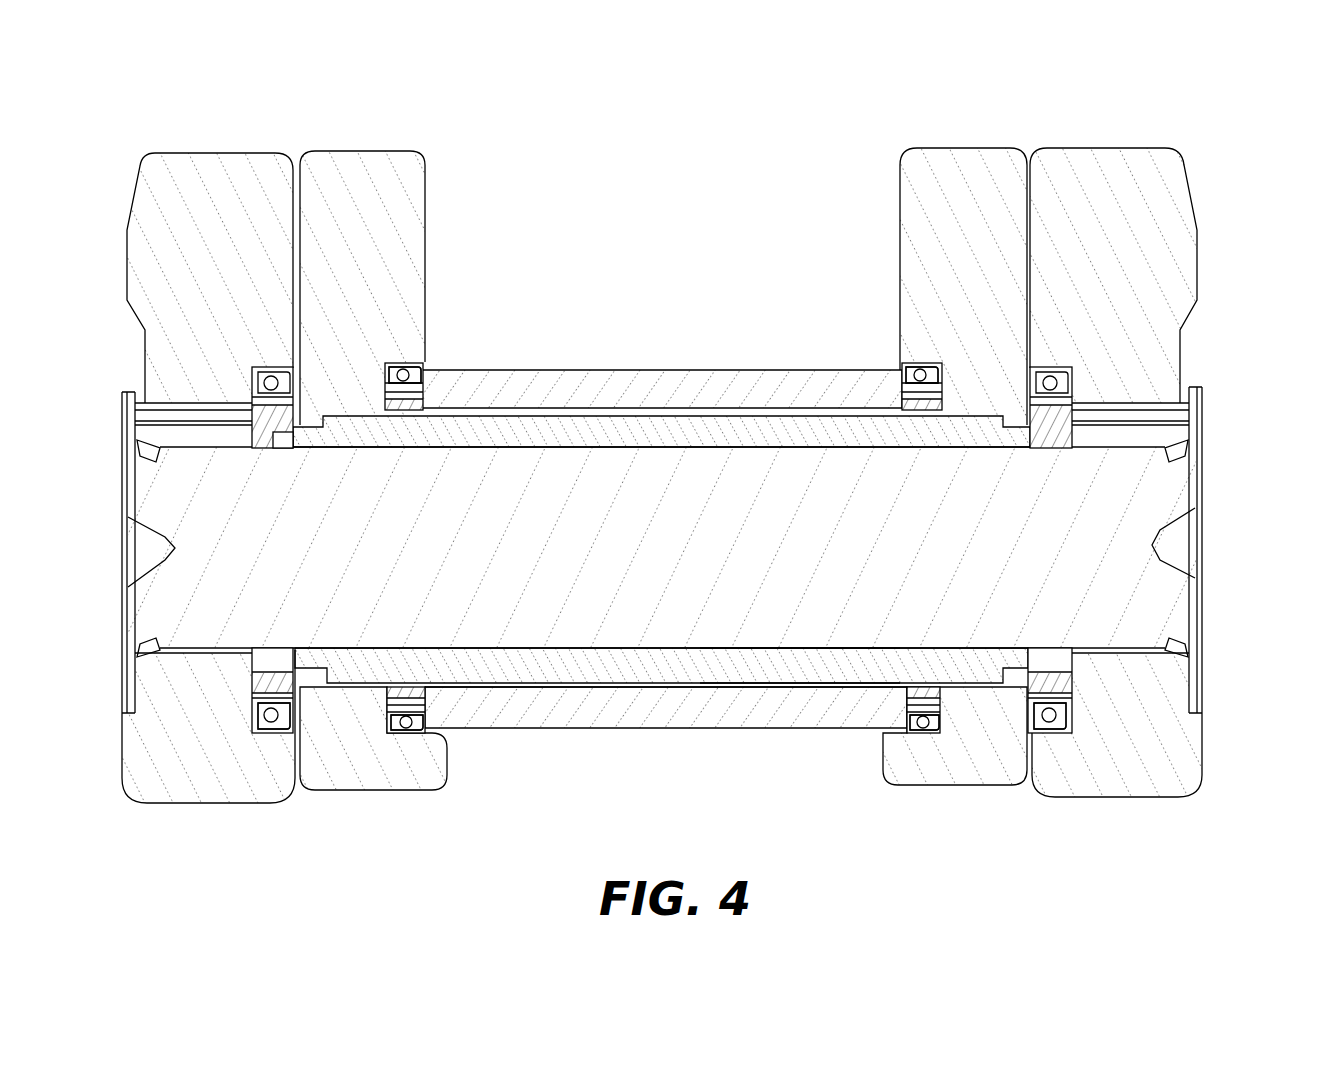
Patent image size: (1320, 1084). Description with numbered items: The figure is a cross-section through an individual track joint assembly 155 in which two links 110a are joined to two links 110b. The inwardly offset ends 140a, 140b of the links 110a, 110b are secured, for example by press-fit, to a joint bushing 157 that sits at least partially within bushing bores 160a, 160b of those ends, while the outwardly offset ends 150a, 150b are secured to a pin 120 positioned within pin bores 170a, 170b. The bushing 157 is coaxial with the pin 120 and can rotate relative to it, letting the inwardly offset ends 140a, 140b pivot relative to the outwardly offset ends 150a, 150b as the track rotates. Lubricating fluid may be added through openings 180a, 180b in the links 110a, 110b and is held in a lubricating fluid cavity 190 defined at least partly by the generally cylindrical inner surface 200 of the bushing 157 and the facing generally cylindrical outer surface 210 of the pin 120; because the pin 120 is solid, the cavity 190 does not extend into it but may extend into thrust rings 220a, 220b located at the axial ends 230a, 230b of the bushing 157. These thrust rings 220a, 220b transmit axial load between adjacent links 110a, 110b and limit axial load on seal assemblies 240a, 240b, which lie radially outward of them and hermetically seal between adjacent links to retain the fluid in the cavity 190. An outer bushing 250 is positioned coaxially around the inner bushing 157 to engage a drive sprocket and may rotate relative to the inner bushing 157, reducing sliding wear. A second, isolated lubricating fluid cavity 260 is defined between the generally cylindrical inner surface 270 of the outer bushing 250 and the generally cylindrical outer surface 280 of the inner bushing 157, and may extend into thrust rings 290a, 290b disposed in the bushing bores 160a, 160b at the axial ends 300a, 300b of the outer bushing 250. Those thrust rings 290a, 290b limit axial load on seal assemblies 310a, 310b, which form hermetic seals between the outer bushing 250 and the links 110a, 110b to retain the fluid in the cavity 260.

The links 110a is at (228, 151).
The links 110b is at (978, 148).
The pin 120 is at (1175, 484).
The inwardly offset end 140a is at (388, 790).
The inwardly offset end 140b is at (955, 787).
The outwardly offset end 150a is at (213, 805).
The outwardly offset end 150b is at (1105, 798).
The track joint assembly 155 is at (752, 130).
The joint bushing 157 is at (455, 432).
The bushing bore 160a is at (355, 392).
The bushing bore 160b is at (970, 398).
The pin bore 170a is at (190, 430).
The pin bore 170b is at (1118, 424).
The opening 180a is at (123, 420).
The opening 180b is at (1201, 417).
The lubricating fluid cavity 190 is at (284, 447).
The inner surface 200 is at (787, 660).
The outer surface 210 is at (813, 633).
The thrust ring 220a is at (265, 392).
The thrust ring 220b is at (1060, 392).
The axial end 230a is at (282, 661).
The axial end 230b is at (1085, 700).
The seal assembly 240a is at (247, 733).
The seal assembly 240b is at (1082, 722).
The outer bushing 250 is at (590, 388).
The lubricating fluid cavity 260 is at (478, 688).
The inner surface 270 is at (538, 690).
The outer surface 280 is at (836, 666).
The thrust ring 290a is at (392, 714).
The thrust ring 290b is at (910, 712).
The axial end 300a is at (436, 707).
The axial end 300b is at (899, 712).
The seal assembly 310a is at (402, 362).
The seal assembly 310b is at (918, 350).